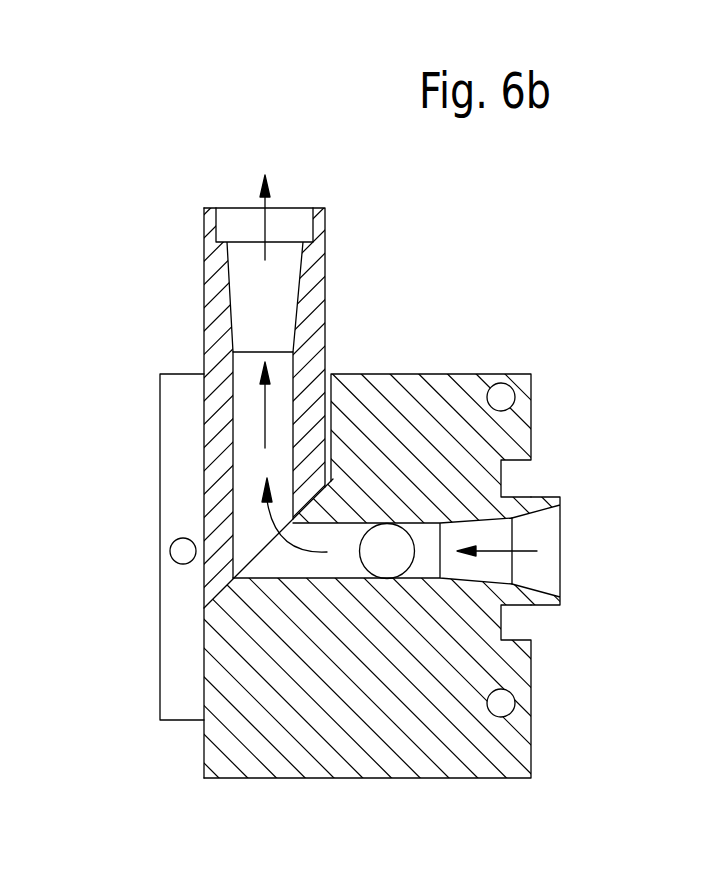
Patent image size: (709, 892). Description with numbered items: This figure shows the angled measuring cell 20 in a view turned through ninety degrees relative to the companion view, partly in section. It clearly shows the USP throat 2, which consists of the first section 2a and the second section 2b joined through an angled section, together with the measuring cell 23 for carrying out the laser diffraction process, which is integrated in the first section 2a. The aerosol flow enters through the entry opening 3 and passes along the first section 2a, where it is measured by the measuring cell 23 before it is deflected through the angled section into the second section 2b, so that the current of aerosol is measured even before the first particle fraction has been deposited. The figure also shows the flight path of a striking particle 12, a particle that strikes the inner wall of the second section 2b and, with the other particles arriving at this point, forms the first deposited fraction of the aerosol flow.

The angled measuring cell 20 is at (136, 279).
The throat 2 is at (333, 354).
The first section 2a is at (543, 563).
The second section 2b is at (280, 290).
The entry opening 3 is at (565, 523).
The flight path of a striking particle 12 is at (247, 526).
The measuring cell 23 is at (397, 705).